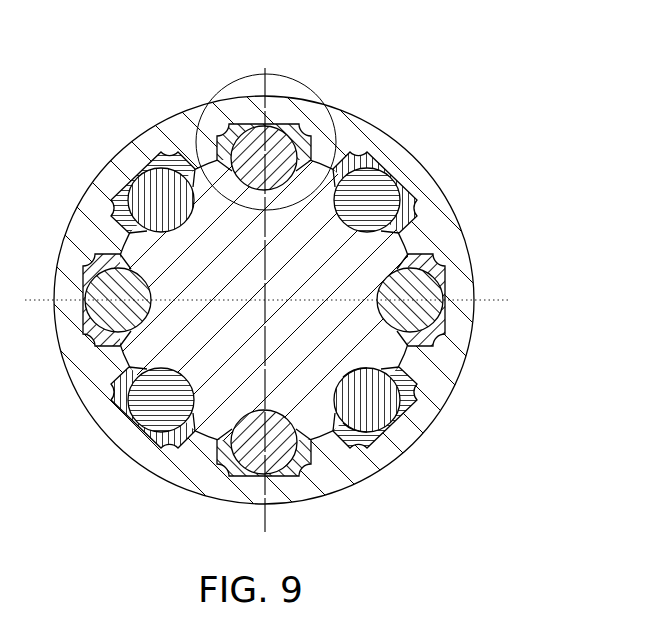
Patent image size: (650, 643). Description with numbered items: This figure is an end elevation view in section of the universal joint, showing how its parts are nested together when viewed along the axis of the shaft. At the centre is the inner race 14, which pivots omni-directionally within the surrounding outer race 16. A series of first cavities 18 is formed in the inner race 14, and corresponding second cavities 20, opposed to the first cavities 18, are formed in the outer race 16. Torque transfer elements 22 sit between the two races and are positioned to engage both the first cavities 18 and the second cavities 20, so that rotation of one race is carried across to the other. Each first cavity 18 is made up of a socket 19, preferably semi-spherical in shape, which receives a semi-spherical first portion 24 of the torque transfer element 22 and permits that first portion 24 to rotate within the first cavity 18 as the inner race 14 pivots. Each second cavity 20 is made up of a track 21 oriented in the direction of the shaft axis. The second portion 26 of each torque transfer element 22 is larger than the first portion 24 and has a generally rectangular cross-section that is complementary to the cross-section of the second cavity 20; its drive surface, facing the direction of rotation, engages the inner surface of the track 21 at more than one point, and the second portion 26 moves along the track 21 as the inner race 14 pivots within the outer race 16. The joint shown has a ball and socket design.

The inner race 14 is at (393, 250).
The outer race 16 is at (458, 258).
The first cavity 18 is at (334, 410).
The socket 19 is at (340, 380).
The second cavity 20 is at (385, 428).
The track 21 is at (403, 413).
The torque transfer element 22 is at (367, 427).
The first portion 24 is at (372, 363).
The second portion 26 is at (413, 392).